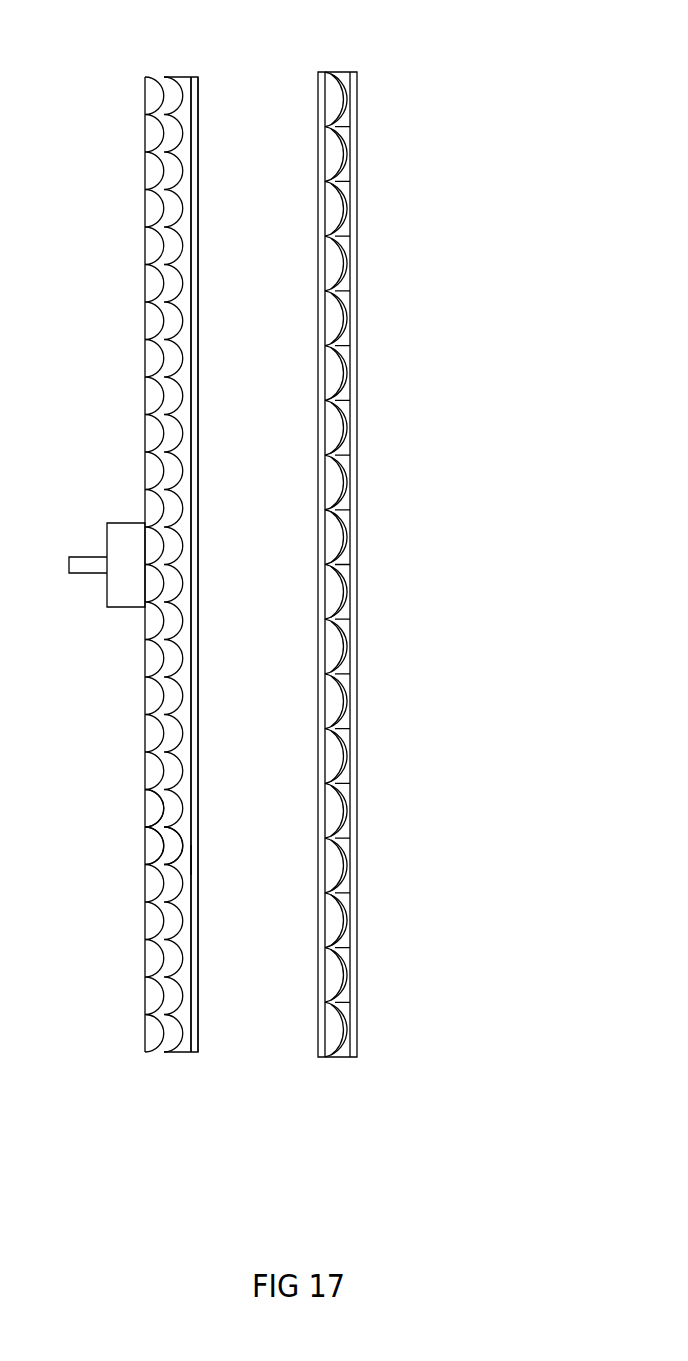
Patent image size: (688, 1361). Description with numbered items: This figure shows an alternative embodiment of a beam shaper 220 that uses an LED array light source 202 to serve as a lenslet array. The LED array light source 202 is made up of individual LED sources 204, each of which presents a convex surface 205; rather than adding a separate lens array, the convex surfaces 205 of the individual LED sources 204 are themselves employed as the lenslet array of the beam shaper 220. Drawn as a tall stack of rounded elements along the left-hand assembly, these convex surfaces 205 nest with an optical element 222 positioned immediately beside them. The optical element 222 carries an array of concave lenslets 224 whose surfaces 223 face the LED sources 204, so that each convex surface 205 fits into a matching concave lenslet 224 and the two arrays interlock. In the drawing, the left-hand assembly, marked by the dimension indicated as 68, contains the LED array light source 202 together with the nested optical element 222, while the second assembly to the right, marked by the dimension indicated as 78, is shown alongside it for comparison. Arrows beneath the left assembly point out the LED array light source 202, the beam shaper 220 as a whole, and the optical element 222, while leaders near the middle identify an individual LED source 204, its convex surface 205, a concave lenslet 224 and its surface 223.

The first lens array assembly 68 is at (225, 50).
The second lens array assembly 78 is at (393, 50).
The LED array light source 202 is at (143, 1056).
The individual LED sources 204 is at (150, 855).
The convex surfaces 205 is at (157, 830).
The beam shaper 220 is at (166, 1076).
The optical element 222 is at (187, 1056).
The surfaces 223 is at (180, 837).
The concave lenslets 224 is at (183, 858).